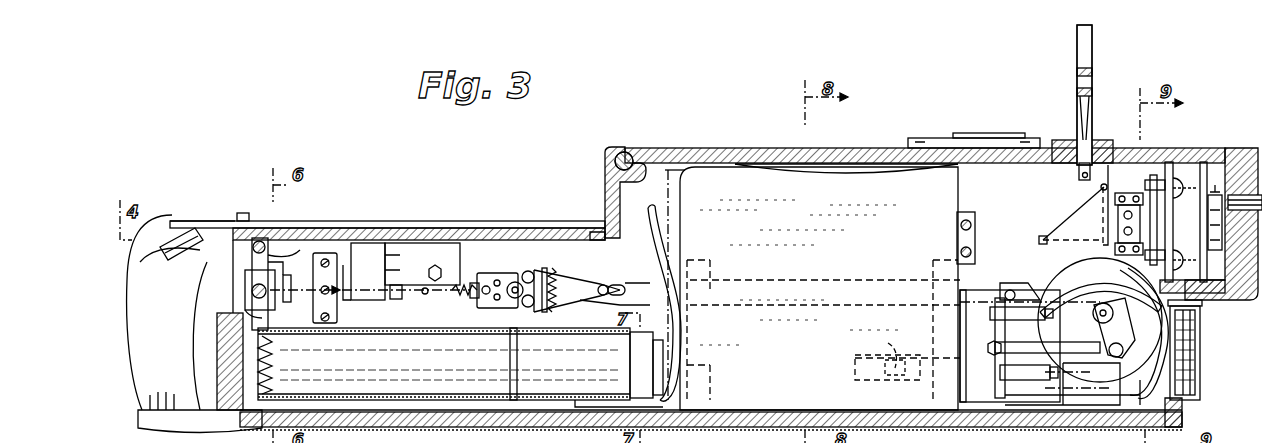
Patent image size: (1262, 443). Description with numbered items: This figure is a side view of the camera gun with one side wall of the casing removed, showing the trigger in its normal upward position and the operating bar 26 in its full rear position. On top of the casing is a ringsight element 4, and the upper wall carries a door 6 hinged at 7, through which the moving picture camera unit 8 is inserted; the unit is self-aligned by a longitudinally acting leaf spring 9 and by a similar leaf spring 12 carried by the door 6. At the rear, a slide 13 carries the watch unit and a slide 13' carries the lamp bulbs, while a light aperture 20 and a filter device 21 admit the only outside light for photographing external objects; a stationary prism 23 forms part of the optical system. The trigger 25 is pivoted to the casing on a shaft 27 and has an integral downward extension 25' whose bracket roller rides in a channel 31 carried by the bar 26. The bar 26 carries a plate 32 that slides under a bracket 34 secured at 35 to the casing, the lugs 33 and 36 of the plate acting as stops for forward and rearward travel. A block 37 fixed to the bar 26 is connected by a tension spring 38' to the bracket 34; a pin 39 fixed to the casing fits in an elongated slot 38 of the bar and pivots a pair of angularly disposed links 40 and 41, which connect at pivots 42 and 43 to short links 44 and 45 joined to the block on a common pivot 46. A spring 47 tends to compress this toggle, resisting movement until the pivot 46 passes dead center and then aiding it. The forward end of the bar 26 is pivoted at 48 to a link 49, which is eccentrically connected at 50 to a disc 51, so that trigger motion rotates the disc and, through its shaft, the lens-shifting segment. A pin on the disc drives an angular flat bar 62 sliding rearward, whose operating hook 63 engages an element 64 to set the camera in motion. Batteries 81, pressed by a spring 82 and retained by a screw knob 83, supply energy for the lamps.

The ringsight element 4 is at (1094, 73).
The door 6 is at (717, 148).
The hinge 7 is at (626, 152).
The moving picture camera unit 8 is at (827, 288).
The longitudinally acting leaf spring 9 is at (680, 335).
The leaf spring 12 is at (822, 168).
The slide 13 is at (1214, 200).
The slide 13' is at (1156, 200).
The light aperture 20 is at (1203, 330).
The filter device 21 is at (1200, 352).
The stationary prism 23 is at (1076, 214).
The trigger 25 is at (182, 220).
The downward extension 25' is at (313, 216).
The operating bar 26 is at (412, 272).
The shaft 27 is at (268, 245).
The channel 31 is at (270, 310).
The plate 32 is at (297, 288).
The lug 33 is at (283, 276).
The bracket 34 is at (337, 262).
The securing point 35 is at (330, 318).
The lug 36 is at (372, 272).
The block 37 is at (497, 280).
The elongated slot 38 is at (624, 270).
The tension spring 38' is at (476, 242).
The pin 39 is at (602, 285).
The link 40 is at (566, 276).
The link 41 is at (568, 304).
The pivot 42 is at (541, 268).
The pivot 43 is at (528, 307).
The short link 44 is at (527, 271).
The short link 45 is at (513, 298).
The common pivot 46 is at (490, 298).
The spring 47 is at (550, 268).
The pivot 48 is at (1008, 290).
The link 49 is at (1030, 290).
The eccentric pivot 50 is at (1056, 300).
The disc 51 is at (1098, 258).
The angular flat bar 62 is at (1130, 333).
The operating hook 63 is at (889, 343).
The element 64 is at (885, 368).
The batteries 81 is at (460, 367).
The spring 82 is at (275, 350).
The screw knob 83 is at (215, 320).